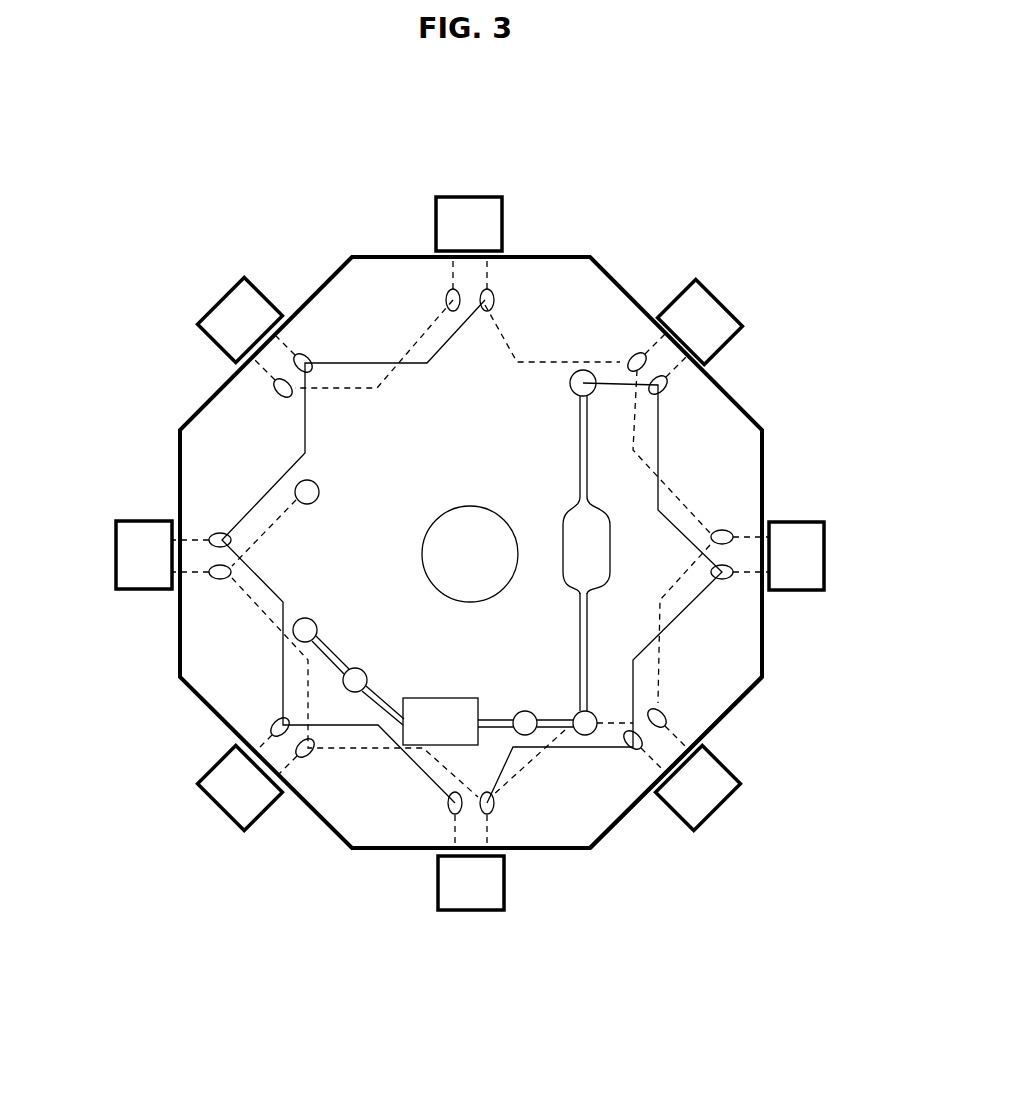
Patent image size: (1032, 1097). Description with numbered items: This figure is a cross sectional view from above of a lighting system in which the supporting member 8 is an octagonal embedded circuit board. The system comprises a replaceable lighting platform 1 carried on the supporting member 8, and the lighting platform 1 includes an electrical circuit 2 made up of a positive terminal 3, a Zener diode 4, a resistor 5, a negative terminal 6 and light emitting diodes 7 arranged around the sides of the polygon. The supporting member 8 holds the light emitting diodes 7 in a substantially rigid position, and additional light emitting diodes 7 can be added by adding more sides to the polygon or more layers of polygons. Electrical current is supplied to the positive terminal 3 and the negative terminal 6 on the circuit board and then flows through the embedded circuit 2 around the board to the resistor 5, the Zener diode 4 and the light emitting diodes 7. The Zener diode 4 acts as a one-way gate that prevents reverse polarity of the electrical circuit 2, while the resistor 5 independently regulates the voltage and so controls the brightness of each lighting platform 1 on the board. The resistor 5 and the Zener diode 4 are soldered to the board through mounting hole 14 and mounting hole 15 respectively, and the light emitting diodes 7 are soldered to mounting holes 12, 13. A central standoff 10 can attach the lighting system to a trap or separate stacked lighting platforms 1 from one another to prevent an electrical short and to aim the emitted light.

The lighting platform 1 is at (600, 265).
The electrical circuit 2 is at (663, 510).
The positive terminal 3 is at (305, 632).
The Zener diode 4 is at (443, 727).
The resistor 5 is at (588, 551).
The negative terminal 6 is at (307, 492).
The light emitting diode 7 is at (462, 227).
The supporting member 8 is at (737, 665).
The standoff 10 is at (477, 553).
The mounting hole 12 is at (455, 810).
The mounting hole 13 is at (487, 810).
The mounting hole 14 is at (355, 680).
The mounting hole 15 is at (580, 378).